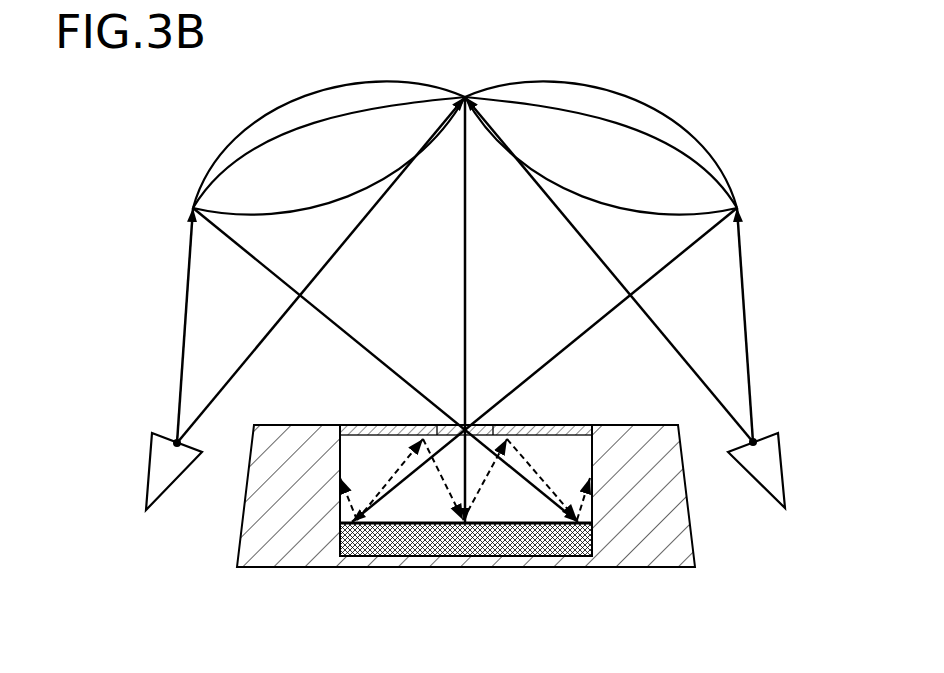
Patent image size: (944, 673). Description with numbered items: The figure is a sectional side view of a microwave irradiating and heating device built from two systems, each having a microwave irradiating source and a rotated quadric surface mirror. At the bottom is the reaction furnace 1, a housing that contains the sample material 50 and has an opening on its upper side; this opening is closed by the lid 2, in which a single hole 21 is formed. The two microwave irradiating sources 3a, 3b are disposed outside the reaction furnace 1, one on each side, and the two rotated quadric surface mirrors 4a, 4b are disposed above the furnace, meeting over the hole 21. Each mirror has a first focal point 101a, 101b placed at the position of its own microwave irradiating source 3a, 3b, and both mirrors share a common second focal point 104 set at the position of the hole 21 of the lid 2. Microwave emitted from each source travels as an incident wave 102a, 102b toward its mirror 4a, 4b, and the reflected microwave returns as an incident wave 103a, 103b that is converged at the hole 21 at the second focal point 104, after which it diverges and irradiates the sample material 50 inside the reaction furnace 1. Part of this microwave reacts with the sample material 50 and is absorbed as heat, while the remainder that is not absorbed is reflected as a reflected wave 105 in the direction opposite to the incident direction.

The reaction furnace 1 is at (272, 521).
The lid 2 is at (360, 425).
The hole 21 is at (447, 427).
The microwave irradiating source 3a is at (781, 470).
The microwave irradiating source 3b is at (148, 487).
The rotated quadric surface mirror 4a is at (678, 128).
The rotated quadric surface mirror 4b is at (250, 128).
The sample material 50 is at (428, 538).
The first focal point 101a is at (758, 437).
The first focal point 101b is at (172, 438).
The incident wave 102a is at (744, 297).
The incident wave 102b is at (186, 313).
The incident wave 103a is at (578, 340).
The incident wave 103b is at (367, 350).
The second focal point 104 is at (468, 428).
The reflected wave 105 is at (478, 483).